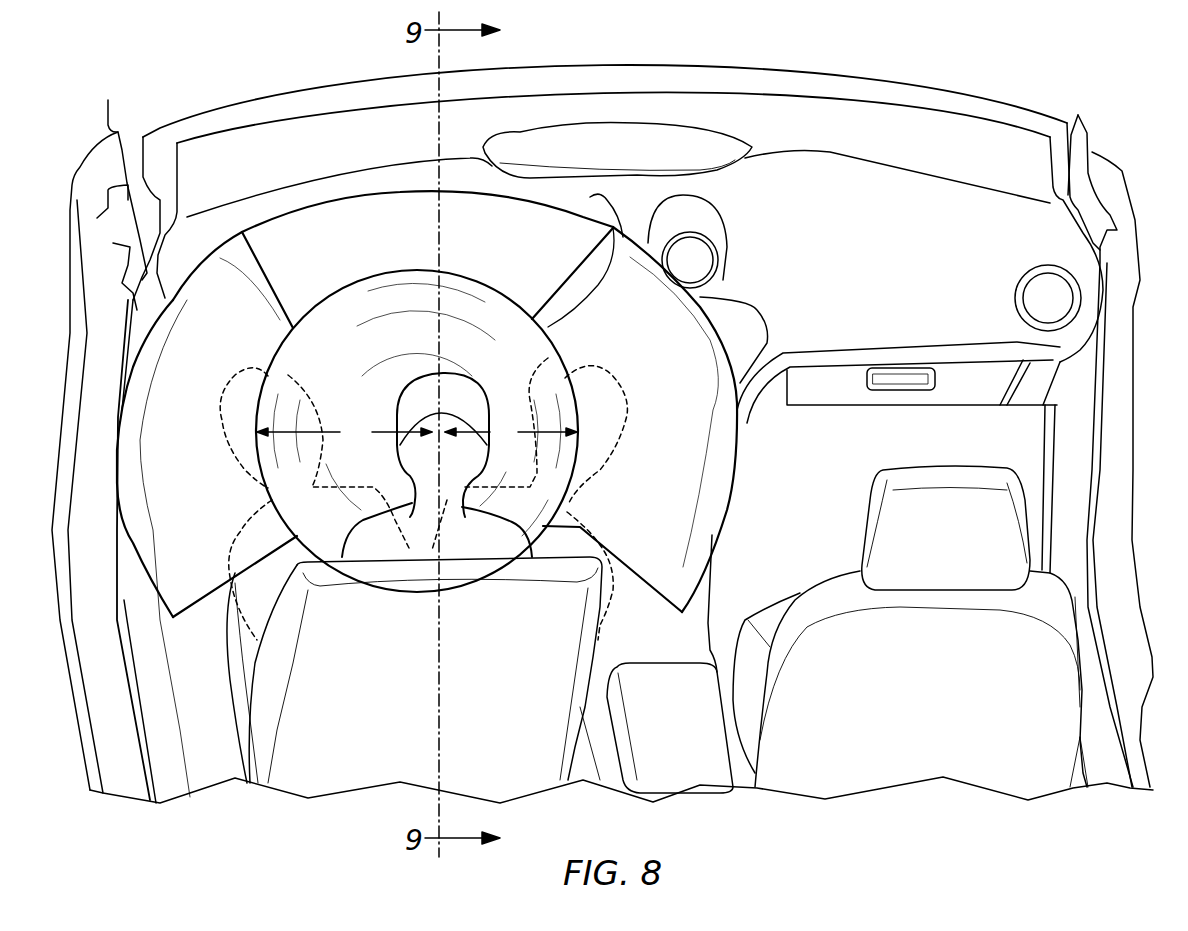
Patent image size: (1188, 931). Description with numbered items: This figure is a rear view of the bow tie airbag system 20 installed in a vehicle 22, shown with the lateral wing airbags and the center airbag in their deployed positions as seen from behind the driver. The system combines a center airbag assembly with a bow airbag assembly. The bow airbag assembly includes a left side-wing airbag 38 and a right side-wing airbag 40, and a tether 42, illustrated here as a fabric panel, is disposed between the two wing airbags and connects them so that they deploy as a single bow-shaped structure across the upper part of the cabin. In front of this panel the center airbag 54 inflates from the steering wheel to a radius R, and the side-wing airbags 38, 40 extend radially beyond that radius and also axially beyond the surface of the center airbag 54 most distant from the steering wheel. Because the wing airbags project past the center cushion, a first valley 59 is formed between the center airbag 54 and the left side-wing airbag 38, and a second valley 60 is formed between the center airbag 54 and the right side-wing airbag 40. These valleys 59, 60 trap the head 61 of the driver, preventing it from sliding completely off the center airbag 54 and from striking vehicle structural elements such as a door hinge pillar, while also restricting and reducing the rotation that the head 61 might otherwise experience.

The bow tie airbag system 20 is at (238, 70).
The vehicle 22 is at (1018, 87).
The left side-wing airbag 38 is at (267, 278).
The right side-wing airbag 40 is at (582, 277).
The tether 42 is at (487, 192).
The center airbag 54 is at (393, 277).
The first valley 59 is at (258, 387).
The second valley 60 is at (578, 460).
The head 61 is at (222, 433).